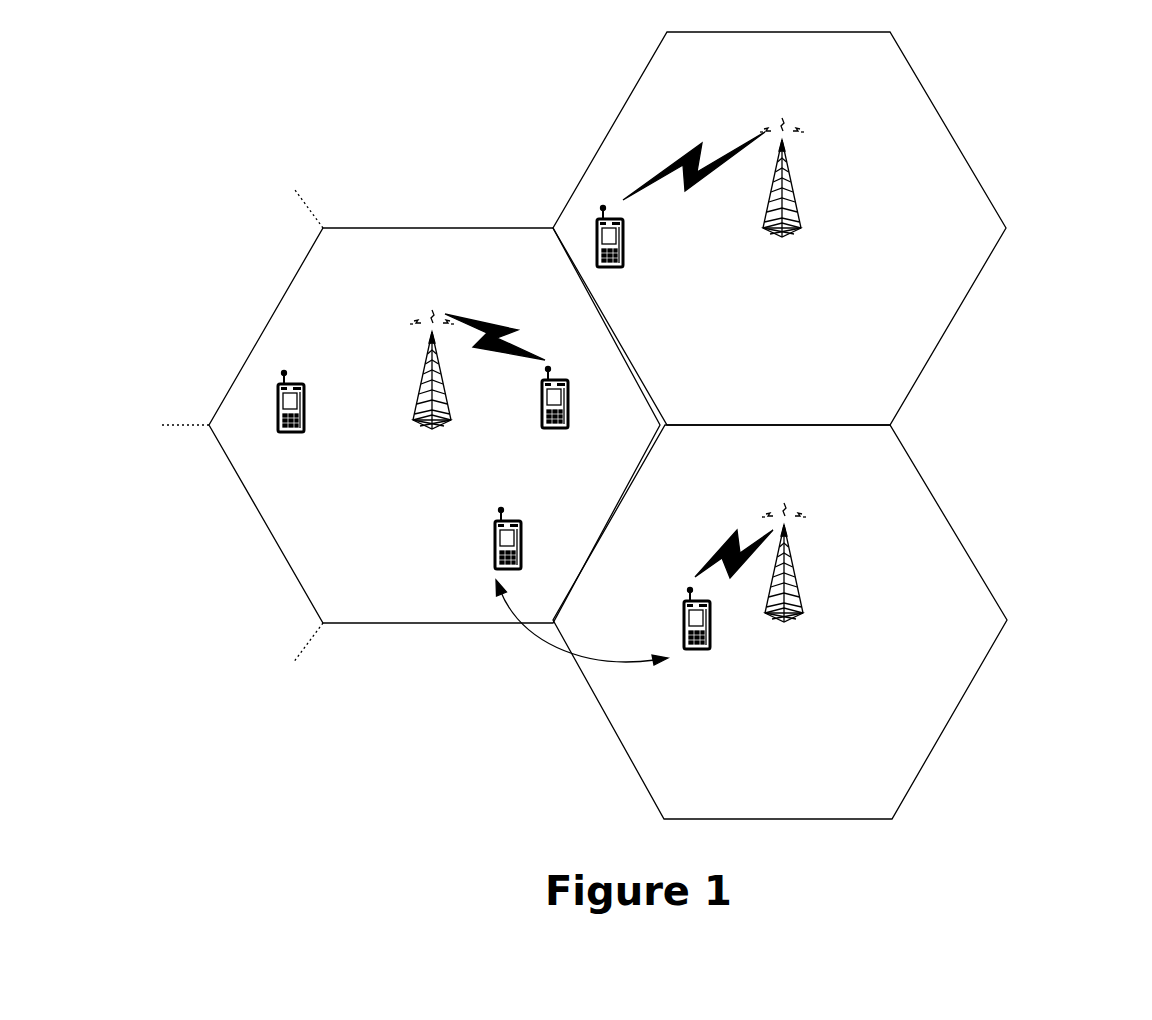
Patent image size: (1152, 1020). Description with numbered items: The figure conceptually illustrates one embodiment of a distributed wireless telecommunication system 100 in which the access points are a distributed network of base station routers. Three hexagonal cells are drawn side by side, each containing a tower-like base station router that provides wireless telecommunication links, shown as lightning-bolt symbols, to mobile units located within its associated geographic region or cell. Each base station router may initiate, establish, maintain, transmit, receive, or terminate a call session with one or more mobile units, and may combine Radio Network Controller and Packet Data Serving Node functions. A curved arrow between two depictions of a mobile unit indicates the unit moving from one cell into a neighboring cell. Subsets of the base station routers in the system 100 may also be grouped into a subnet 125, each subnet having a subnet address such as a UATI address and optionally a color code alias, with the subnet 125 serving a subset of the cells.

The distributed wireless telecommunication system 100 is at (1050, 127).
The subnet 125 is at (286, 432).